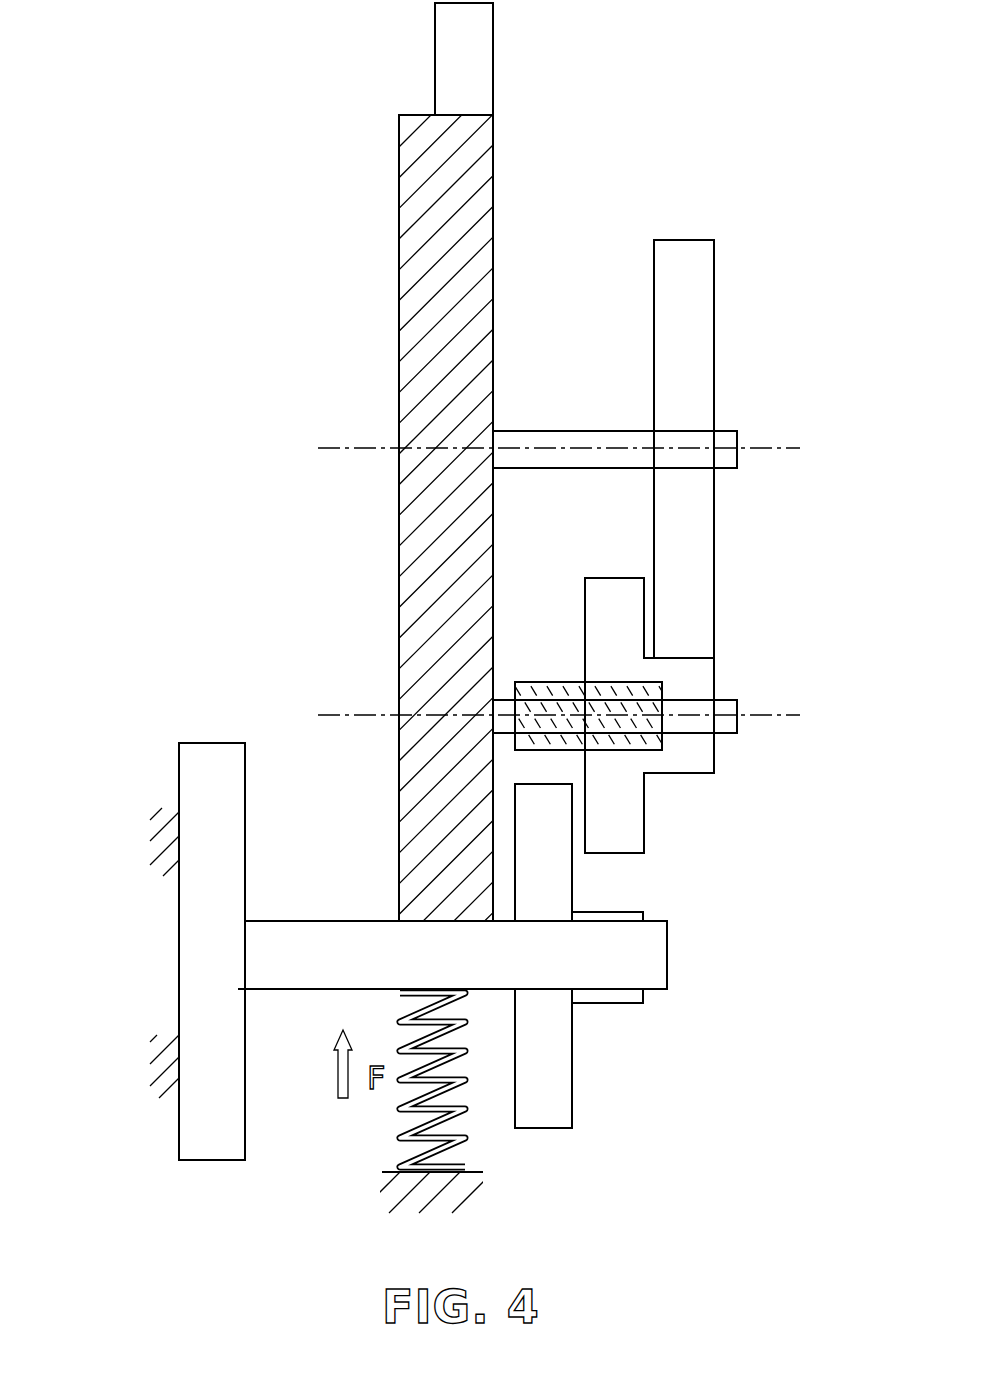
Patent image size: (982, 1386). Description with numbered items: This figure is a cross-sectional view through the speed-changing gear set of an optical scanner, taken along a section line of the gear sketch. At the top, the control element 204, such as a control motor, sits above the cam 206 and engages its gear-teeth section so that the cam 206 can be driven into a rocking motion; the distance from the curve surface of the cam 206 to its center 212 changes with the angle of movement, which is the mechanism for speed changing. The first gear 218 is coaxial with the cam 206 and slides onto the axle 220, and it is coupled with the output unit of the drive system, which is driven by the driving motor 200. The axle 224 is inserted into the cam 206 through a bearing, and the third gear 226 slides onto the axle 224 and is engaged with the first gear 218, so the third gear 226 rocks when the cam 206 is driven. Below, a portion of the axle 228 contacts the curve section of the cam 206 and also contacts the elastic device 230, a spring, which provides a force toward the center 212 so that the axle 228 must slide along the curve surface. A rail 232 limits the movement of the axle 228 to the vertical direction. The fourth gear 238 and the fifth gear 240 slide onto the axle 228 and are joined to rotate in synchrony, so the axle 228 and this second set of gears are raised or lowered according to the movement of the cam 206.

The driving motor 200 is at (520, 692).
The control element 204 is at (445, 37).
The cam 206 is at (399, 270).
The center of the cam 212 is at (343, 442).
The first gear 218 is at (714, 293).
The axle 220 is at (551, 440).
The axle 224 is at (737, 735).
The third gear 226 is at (714, 680).
The axle 228 is at (640, 957).
The elastic device 230 is at (400, 1137).
The rail 232 is at (202, 936).
The fourth gear 238 is at (609, 1003).
The fifth gear 240 is at (553, 1090).